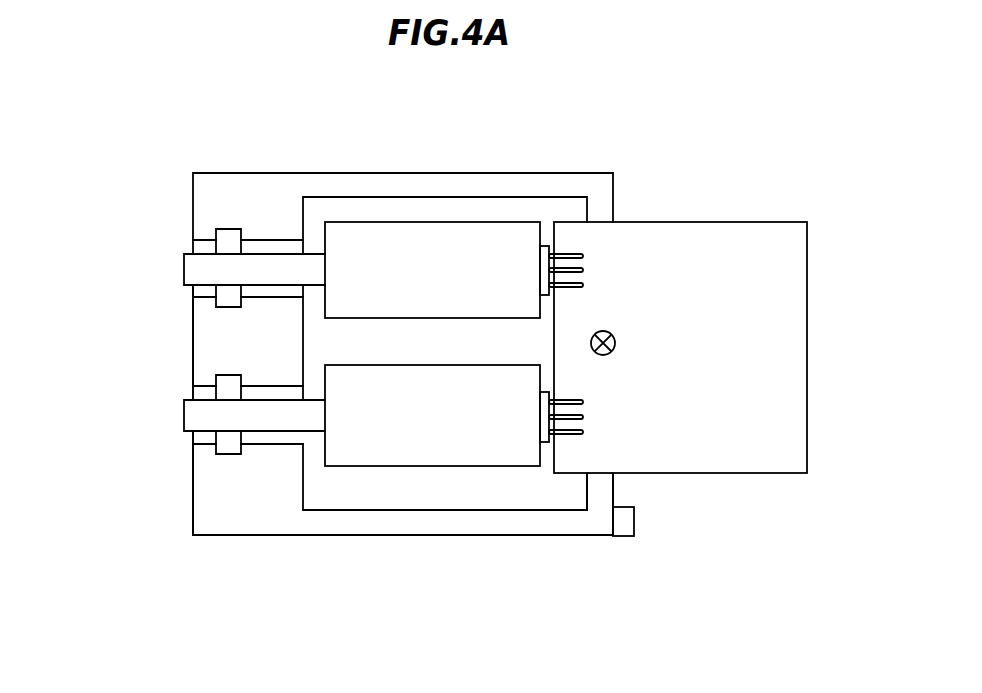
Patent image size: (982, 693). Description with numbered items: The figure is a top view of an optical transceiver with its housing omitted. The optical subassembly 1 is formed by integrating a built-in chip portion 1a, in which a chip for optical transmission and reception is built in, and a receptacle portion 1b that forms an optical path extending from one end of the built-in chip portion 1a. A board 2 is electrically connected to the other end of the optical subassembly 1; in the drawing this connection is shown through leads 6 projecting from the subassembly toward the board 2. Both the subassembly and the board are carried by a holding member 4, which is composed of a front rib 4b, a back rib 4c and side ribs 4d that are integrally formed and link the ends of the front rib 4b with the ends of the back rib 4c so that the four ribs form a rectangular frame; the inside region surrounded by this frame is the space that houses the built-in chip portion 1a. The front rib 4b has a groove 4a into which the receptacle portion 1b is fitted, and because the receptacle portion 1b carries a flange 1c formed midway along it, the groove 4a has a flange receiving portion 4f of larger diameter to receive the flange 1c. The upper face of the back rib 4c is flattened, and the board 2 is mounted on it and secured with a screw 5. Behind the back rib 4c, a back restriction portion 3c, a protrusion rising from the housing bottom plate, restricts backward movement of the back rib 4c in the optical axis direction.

The optical subassembly 1 is at (317, 186).
The built-in chip portion 1a is at (350, 222).
The receptacle portion 1b is at (262, 249).
The flange 1c is at (163, 229).
The board 2 is at (740, 222).
The back restriction portion 3c is at (634, 522).
The holding member 4 is at (383, 535).
The groove 4a is at (208, 443).
The front rib 4b is at (205, 512).
The back rib 4c is at (614, 488).
The side rib 4d is at (488, 535).
The flange receiving portion 4f is at (213, 382).
The screw 5 is at (604, 332).
The lead 6 is at (568, 253).